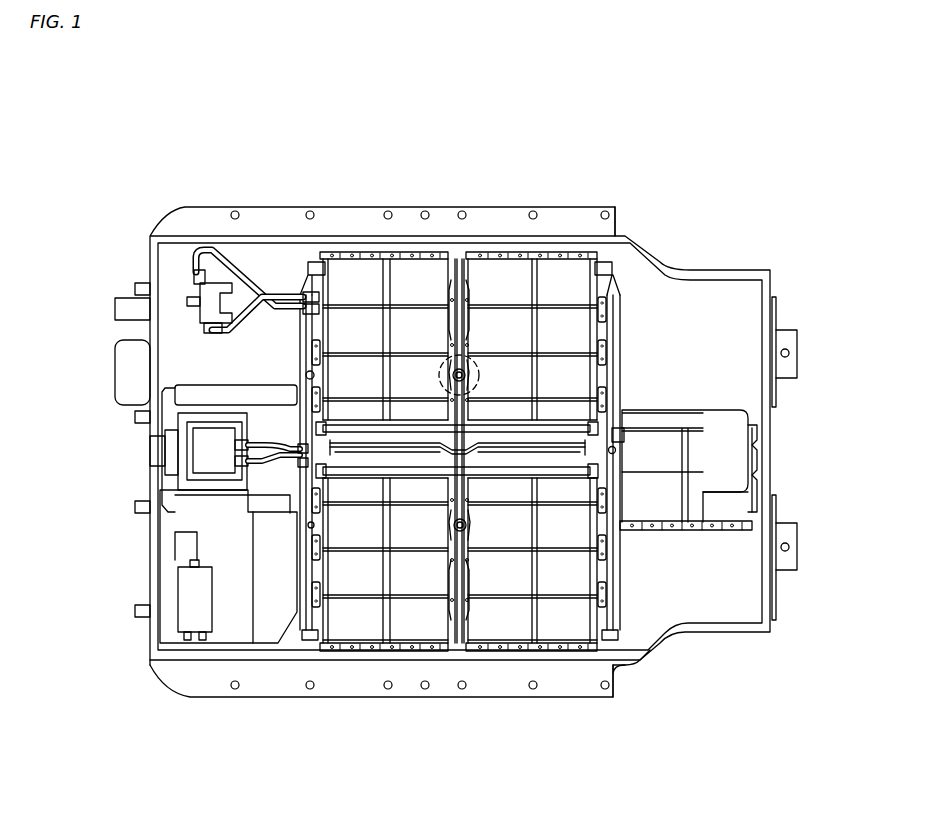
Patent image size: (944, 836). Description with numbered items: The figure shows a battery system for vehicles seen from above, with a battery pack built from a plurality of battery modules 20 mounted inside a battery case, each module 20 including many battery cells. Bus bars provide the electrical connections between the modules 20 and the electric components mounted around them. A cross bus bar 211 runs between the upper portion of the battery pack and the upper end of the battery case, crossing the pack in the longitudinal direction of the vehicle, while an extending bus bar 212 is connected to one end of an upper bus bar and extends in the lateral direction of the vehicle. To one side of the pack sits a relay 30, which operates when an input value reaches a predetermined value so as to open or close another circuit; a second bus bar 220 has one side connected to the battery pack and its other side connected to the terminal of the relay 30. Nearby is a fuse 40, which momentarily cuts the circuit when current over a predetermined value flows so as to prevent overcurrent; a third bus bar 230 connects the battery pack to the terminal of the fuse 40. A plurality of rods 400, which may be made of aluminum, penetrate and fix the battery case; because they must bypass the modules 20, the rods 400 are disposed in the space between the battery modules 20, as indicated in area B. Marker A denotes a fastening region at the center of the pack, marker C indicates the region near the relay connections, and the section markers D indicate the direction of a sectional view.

The battery module 20 is at (420, 275).
The relay 30 is at (205, 450).
The fuse 40 is at (205, 293).
The cross bus bar 211 is at (560, 473).
The extending bus bar 212 is at (620, 333).
The second bus bar 220 is at (300, 468).
The third bus bar 230 is at (280, 297).
The rod 400 is at (308, 374).
The detail region A is at (467, 358).
The area B is at (295, 525).
The detail region C is at (300, 446).
The section line D is at (351, 197).